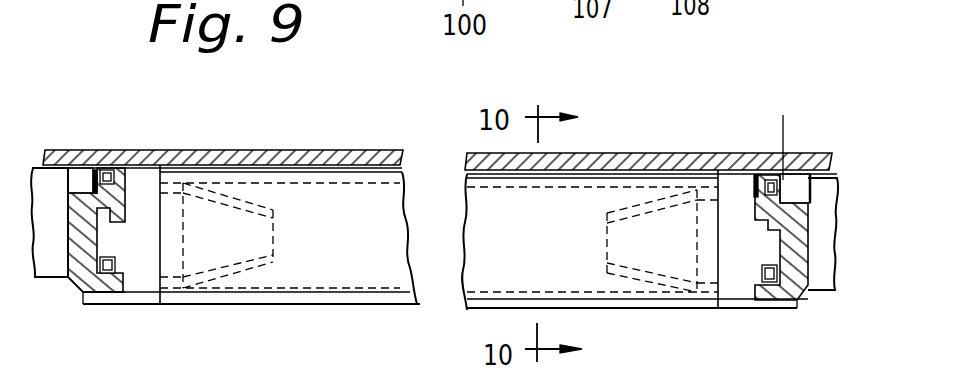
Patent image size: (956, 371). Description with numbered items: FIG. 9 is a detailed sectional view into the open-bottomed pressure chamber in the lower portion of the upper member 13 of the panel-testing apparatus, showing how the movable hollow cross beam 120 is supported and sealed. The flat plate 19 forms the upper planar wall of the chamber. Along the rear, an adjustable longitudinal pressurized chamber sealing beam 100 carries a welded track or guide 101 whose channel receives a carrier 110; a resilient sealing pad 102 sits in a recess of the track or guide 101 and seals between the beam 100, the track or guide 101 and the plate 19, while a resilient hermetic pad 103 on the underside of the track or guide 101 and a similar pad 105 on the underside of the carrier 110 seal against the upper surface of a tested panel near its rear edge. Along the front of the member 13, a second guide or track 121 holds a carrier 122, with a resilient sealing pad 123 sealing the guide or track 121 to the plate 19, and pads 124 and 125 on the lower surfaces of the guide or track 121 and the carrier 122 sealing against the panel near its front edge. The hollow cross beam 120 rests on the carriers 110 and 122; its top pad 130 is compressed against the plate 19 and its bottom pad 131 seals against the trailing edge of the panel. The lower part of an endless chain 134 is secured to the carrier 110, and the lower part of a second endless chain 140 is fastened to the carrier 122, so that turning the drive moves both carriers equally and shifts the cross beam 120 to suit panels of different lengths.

The upper member 13 is at (47, 263).
The flat plate 19 is at (624, 172).
The pressurized chamber sealing beam 100 is at (823, 224).
The track or guide 101 is at (781, 133).
The resilient sealing pad 102 is at (800, 186).
The resilient hermetic pad 103 is at (788, 304).
The resilient hermetic pad 105 is at (737, 308).
The carrier 110 is at (733, 190).
The hollow cross beam 120 is at (350, 277).
The guide or track 121 is at (96, 174).
The carrier 122 is at (146, 183).
The resilient sealing pad 123 is at (80, 173).
The resilient hermetic pad 124 is at (90, 306).
The resilient hermetic pad 125 is at (148, 293).
The resilient sealing pad 130 is at (297, 167).
The resilient sealing pad 131 is at (260, 292).
The endless chain 134 is at (767, 176).
The endless chain 140 is at (110, 170).